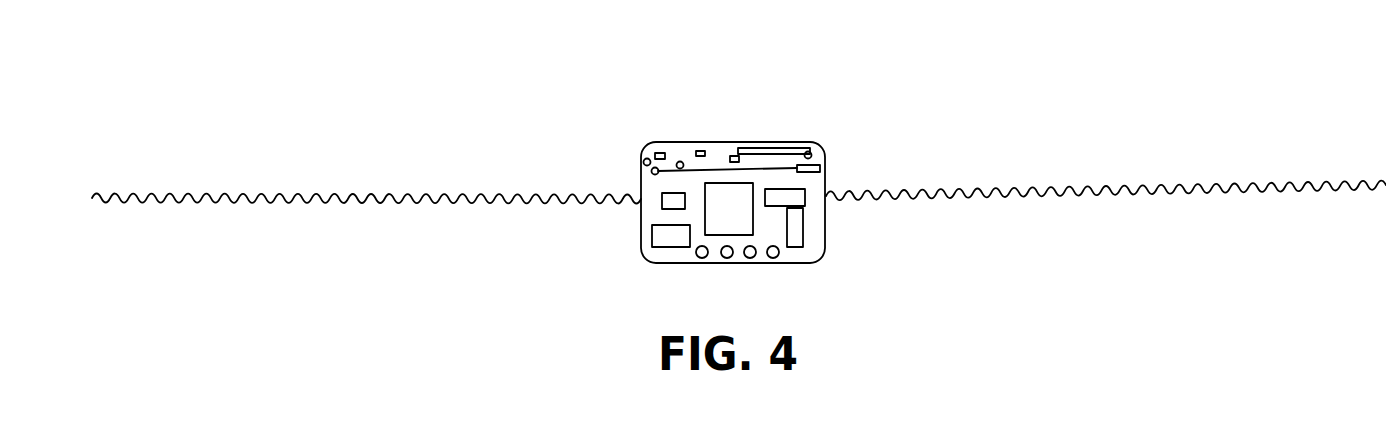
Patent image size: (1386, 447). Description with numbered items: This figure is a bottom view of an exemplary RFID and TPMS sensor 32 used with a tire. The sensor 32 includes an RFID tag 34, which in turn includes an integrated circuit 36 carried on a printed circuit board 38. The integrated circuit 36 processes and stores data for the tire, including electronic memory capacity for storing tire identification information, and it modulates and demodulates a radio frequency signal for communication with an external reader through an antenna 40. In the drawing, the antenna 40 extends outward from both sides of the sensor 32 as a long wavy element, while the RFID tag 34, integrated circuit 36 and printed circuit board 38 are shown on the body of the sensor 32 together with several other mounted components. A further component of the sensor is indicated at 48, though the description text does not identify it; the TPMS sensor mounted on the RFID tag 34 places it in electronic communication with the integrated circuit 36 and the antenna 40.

The RFID and TPMS sensor 32 is at (764, 124).
The RFID tag 34 is at (663, 143).
The integrated circuit 36 is at (733, 152).
The printed circuit board 38 is at (815, 144).
The antenna 40 is at (463, 193).
The connector port 48 is at (750, 256).